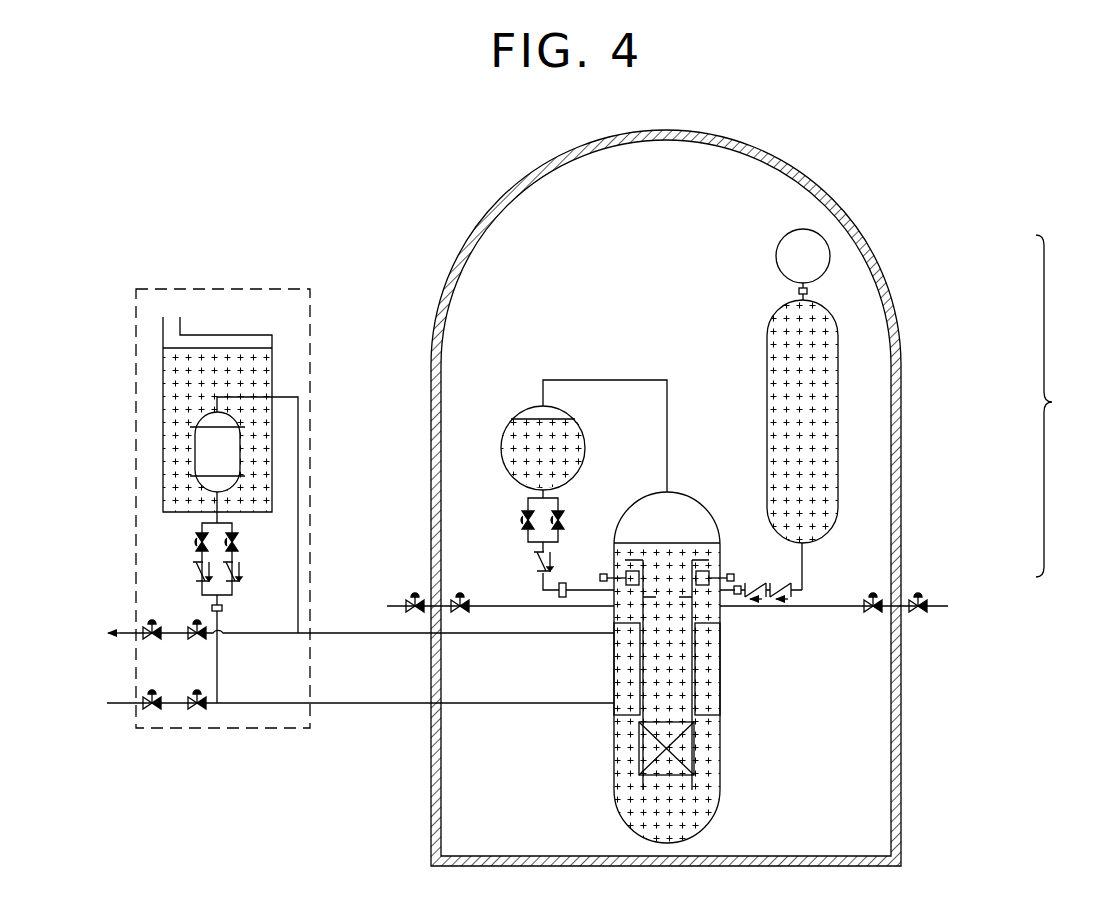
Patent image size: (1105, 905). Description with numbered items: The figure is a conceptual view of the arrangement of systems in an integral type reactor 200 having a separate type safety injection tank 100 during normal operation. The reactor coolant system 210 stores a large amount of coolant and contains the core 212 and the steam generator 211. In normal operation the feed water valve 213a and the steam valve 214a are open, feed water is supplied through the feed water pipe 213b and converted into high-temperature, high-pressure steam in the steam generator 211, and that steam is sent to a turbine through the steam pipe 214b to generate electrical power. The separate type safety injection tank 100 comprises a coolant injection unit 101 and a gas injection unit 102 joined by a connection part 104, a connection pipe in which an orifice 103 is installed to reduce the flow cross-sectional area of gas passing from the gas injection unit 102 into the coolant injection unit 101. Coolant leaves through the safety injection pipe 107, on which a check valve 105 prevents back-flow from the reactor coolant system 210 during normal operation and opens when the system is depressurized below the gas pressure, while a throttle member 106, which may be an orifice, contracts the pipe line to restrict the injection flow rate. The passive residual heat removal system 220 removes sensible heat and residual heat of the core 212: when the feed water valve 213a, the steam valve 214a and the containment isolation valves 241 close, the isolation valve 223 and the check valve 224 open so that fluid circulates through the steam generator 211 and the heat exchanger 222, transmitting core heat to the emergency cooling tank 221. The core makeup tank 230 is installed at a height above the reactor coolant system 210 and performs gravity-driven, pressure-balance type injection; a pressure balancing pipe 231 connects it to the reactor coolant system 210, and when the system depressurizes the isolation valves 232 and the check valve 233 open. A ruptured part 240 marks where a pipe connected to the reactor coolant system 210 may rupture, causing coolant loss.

The separate type safety injection tank 100 is at (1067, 406).
The coolant injection unit 101 is at (830, 415).
The gas injection unit 102 is at (818, 254).
The orifice 103 is at (808, 291).
The connection part 104 is at (808, 298).
The check valve 105 is at (797, 583).
The throttle member 106 is at (737, 585).
The safety injection pipe 107 is at (797, 596).
The integral type reactor 200 is at (418, 222).
The reactor coolant system 210 is at (690, 800).
The steam generator 211 is at (712, 697).
The core 212 is at (690, 745).
The feed water valve 213a is at (197, 711).
The feed water pipe 213b is at (371, 703).
The steam valve 214a is at (197, 641).
The steam pipe 214b is at (371, 633).
The passive residual heat removal system 220 is at (222, 289).
The emergency cooling tank 221 is at (178, 388).
The heat exchanger 222 is at (212, 450).
The isolation valve 223 is at (200, 541).
The check valve 224 is at (200, 574).
The core makeup tank 230 is at (503, 447).
The pressure balancing pipe 231 is at (540, 396).
The isolation valves 232 is at (522, 518).
The check valve 233 is at (536, 562).
The ruptured part 240 is at (497, 606).
The containment isolation valves 241 is at (410, 612).